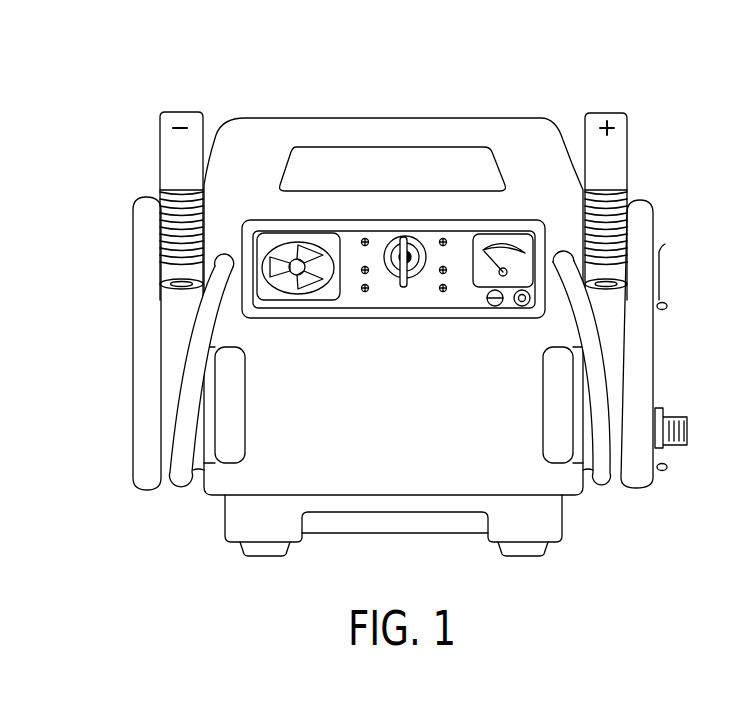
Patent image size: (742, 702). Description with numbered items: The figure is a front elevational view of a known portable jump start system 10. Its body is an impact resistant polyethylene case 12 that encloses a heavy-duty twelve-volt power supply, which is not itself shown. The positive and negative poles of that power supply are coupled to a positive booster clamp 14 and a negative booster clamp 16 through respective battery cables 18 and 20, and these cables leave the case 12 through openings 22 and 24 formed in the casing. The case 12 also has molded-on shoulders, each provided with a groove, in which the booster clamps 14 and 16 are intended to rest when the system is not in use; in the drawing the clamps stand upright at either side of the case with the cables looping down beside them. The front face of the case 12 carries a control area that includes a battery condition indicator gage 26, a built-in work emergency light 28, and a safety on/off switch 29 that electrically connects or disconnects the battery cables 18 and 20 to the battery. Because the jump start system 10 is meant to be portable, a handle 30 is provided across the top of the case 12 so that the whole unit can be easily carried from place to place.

The jump start system 10 is at (642, 60).
The case 12 is at (553, 135).
The positive booster clamp 14 is at (613, 150).
The negative booster clamp 16 is at (172, 147).
The battery cable 18 is at (602, 470).
The battery cable 20 is at (182, 477).
The opening 22 is at (573, 250).
The opening 24 is at (222, 252).
The battery condition indicator gage 26 is at (493, 245).
The built-in work emergency light 28 is at (292, 248).
The safety on/off switch 29 is at (403, 240).
The handle 30 is at (393, 128).